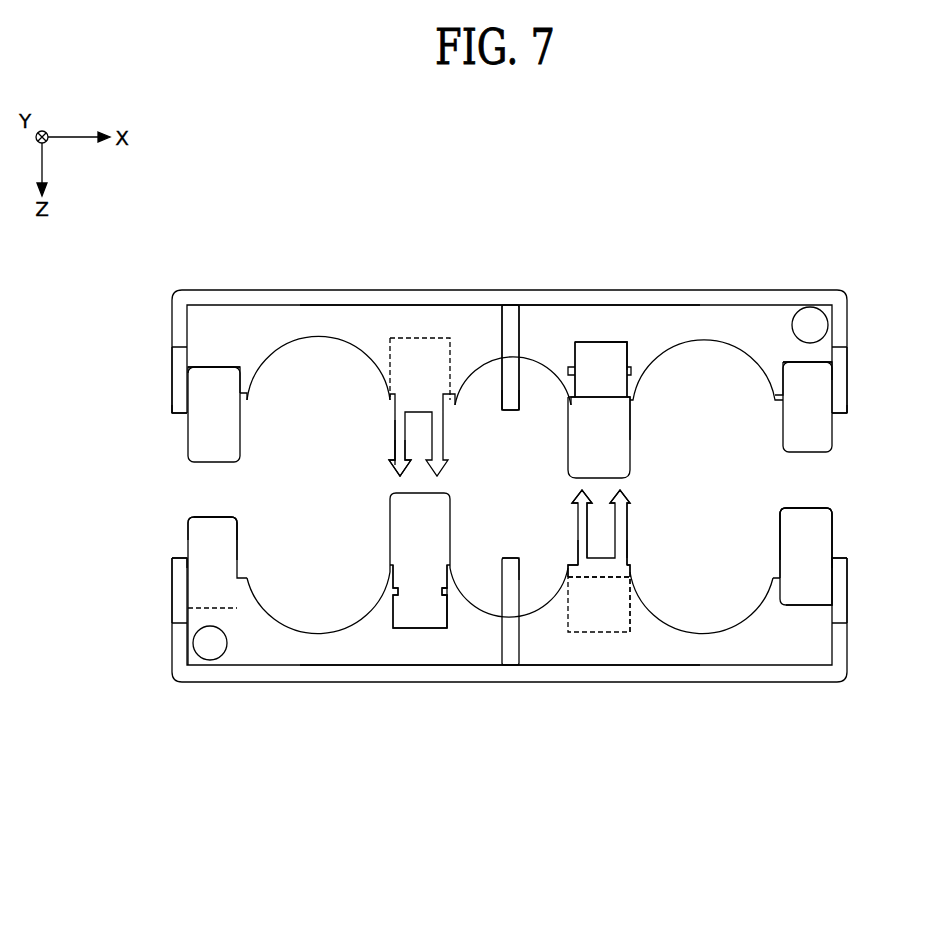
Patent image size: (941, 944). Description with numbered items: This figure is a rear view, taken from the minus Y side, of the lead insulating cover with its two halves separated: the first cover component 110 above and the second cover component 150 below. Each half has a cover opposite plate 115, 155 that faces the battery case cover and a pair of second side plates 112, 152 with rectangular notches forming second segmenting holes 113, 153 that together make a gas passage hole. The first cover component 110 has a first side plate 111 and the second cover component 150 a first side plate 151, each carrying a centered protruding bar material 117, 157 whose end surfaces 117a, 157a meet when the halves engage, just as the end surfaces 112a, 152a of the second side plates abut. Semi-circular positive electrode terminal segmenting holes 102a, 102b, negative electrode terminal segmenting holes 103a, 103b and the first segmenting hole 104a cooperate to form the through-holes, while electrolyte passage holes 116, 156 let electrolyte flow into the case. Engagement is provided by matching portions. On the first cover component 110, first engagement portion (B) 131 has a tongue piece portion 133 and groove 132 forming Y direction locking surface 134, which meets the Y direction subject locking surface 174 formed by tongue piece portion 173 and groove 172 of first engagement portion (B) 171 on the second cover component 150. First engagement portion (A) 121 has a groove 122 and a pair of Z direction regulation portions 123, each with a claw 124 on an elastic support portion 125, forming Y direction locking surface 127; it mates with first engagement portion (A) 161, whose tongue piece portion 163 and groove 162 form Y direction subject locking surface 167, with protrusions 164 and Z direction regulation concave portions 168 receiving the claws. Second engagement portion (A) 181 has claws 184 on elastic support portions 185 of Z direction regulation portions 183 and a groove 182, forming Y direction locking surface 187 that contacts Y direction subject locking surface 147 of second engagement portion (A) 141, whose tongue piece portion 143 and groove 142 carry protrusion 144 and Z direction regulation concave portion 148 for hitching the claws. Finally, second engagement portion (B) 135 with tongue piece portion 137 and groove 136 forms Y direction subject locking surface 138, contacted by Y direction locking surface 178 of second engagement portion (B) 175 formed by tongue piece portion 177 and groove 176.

The second cover component 150 is at (152, 312).
The first side plate 151 is at (549, 292).
The second side plates 152 is at (175, 330).
The second segmenting hole 153 is at (175, 368).
The +Z-side end surface 152a is at (182, 414).
The Y direction subject locking surface 174 is at (195, 445).
The first engagement portion (B) 171 is at (150, 194).
The groove 172 is at (222, 363).
The tongue piece portion 173 is at (254, 392).
The positive electrode terminal segmenting hole 102b is at (289, 360).
The second engagement portion (A) 181 is at (308, 166).
The Z direction regulation portions 183 is at (282, 208).
The claw 184 is at (383, 468).
The elastic support portion 185 is at (402, 437).
The groove 182 is at (399, 347).
The Y direction locking surface 187 is at (435, 395).
The cover opposite plate 155 is at (448, 380).
The first segmenting hole 104a is at (506, 422).
The +Z-side end surface 157a is at (473, 367).
The protruding bar material 157 is at (513, 387).
The Z direction regulation concave portion 168 is at (566, 382).
The first engagement portion (A) 161 is at (625, 194).
The protrusion 164 is at (588, 382).
The groove 162 is at (612, 340).
The tongue piece portion 163 is at (628, 425).
The Y direction subject locking surface 167 is at (585, 432).
The negative electrode terminal segmenting hole 103b is at (698, 346).
The second engagement portion (B) 175 is at (838, 194).
The tongue piece portion 177 is at (766, 402).
The groove 176 is at (796, 362).
The electrolyte passage hole 156 is at (812, 318).
The Y direction locking surface 178 is at (797, 432).
The first cover component 110 is at (142, 690).
The first side plate 111 is at (549, 672).
The second side plates 112 is at (180, 641).
The second segmenting hole 113 is at (180, 600).
The −Z-side end surface 112a is at (172, 556).
The first engagement portion (B) 131 is at (287, 808).
The groove 132 is at (231, 608).
The tongue piece portion 133 is at (232, 550).
The Y direction locking surface 134 is at (200, 532).
The electrolyte passage hole 116 is at (210, 650).
The positive electrode terminal segmenting hole 102a is at (306, 620).
The Y direction subject locking surface 147 is at (402, 528).
The second engagement portion (A) 141 is at (412, 808).
The tongue piece portion 143 is at (398, 540).
The groove 142 is at (397, 628).
The protrusion 144 is at (432, 598).
The Z direction regulation concave portion 148 is at (453, 615).
The protruding bar material 117 is at (517, 645).
The −Z-side end surface 117a is at (508, 646).
The cover opposite plate 115 is at (598, 650).
The Y direction locking surface 127 is at (587, 580).
The first engagement portion (A) 121 is at (728, 840).
The groove 122 is at (650, 622).
The Z direction regulation portions 123 is at (655, 798).
The elastic support portion 125 is at (618, 540).
The claw 124 is at (626, 506).
The negative electrode terminal segmenting hole 103a is at (722, 612).
The second engagement portion (B) 135 is at (885, 804).
The tongue piece portion 137 is at (783, 548).
The groove 136 is at (800, 593).
The Y direction subject locking surface 138 is at (795, 528).